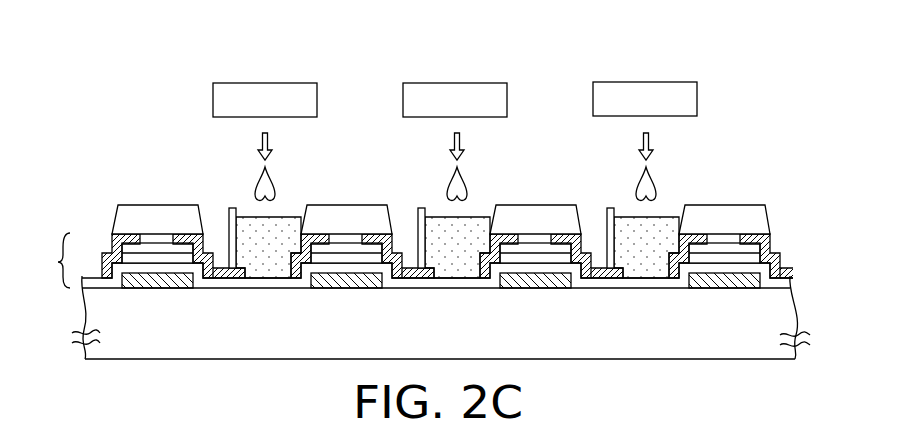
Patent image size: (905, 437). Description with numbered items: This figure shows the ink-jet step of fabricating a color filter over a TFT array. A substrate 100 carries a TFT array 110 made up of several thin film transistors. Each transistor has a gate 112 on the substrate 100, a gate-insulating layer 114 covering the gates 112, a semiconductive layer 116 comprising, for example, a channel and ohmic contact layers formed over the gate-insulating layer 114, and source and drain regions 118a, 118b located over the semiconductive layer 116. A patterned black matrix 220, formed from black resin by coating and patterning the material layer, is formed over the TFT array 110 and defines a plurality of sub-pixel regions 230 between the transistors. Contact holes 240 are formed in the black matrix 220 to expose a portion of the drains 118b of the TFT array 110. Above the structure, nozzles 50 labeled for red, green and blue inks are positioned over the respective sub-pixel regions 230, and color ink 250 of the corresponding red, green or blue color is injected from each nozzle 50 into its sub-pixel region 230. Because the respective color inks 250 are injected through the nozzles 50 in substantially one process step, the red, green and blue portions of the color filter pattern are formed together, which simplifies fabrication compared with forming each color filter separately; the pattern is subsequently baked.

The nozzle 50 is at (237, 83).
The substrate 100 is at (97, 320).
The TFT array 110 is at (46, 260).
The gate 112 is at (151, 276).
The gate-insulating layer 114 is at (153, 271).
The semiconductive layer 116 is at (753, 250).
The source region 118a is at (307, 248).
The drain region 118b is at (385, 248).
The patterned black matrix 220 is at (347, 227).
The sub-pixel region 230 is at (492, 208).
The contact hole 240 is at (215, 204).
The color ink 250 is at (627, 227).